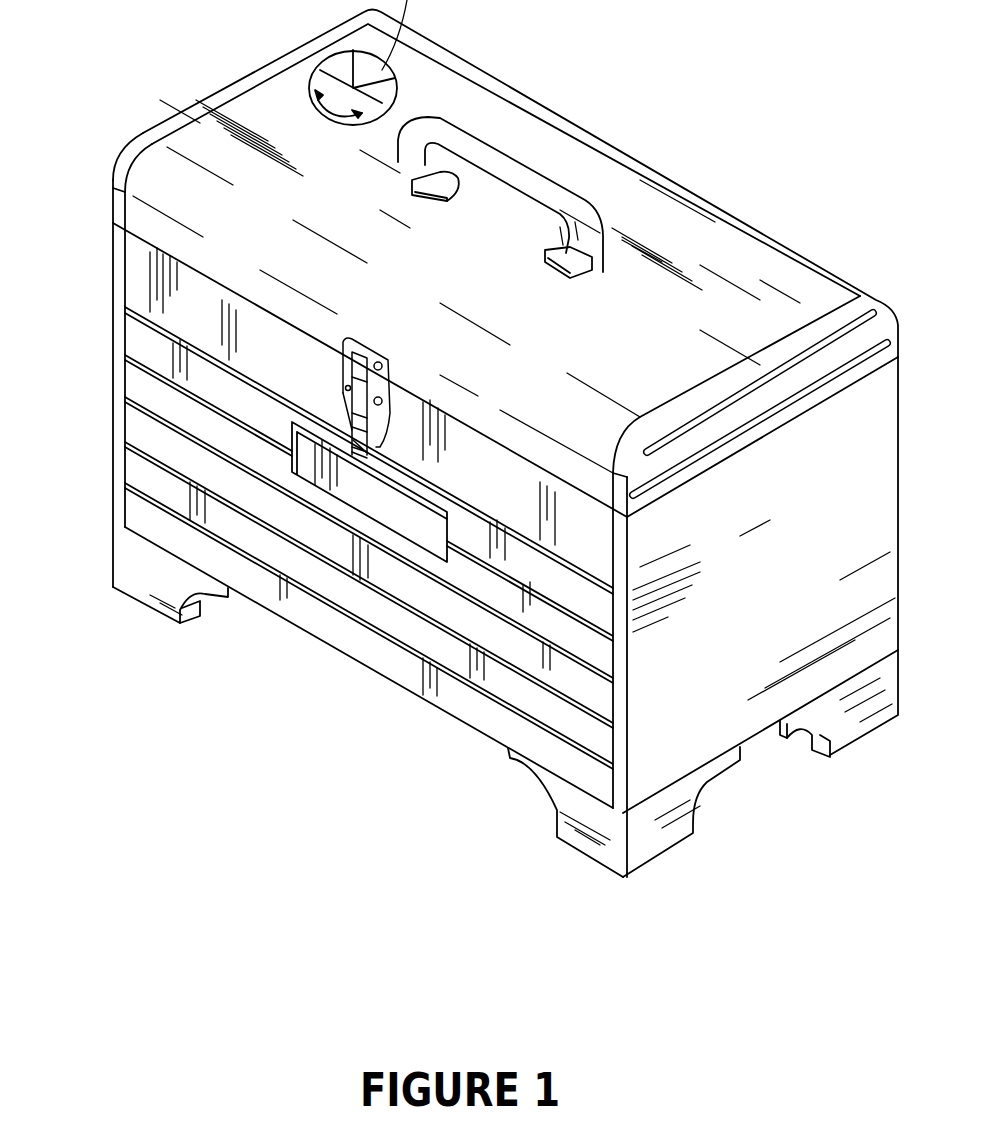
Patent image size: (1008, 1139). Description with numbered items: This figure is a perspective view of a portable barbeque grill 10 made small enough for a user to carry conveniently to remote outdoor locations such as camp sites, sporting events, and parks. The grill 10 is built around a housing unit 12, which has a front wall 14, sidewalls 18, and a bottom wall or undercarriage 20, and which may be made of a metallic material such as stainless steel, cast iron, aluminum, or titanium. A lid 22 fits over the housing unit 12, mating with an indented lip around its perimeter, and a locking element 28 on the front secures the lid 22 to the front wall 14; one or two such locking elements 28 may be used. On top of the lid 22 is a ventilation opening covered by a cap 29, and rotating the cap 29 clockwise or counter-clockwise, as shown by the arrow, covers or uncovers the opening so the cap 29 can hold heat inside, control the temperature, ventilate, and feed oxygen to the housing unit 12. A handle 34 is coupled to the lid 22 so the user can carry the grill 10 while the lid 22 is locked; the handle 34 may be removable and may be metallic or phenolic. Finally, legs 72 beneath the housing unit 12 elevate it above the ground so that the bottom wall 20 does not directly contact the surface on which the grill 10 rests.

The portable barbeque grill 10 is at (786, 72).
The housing unit 12 is at (95, 438).
The front wall 14 is at (318, 622).
The sidewalls 18 is at (806, 560).
The bottom wall or undercarriage 20 is at (778, 723).
The lid 22 is at (660, 353).
The locking element 28 is at (362, 346).
The cap 29 is at (333, 88).
The handle 34 is at (498, 163).
The legs 72 is at (660, 840).